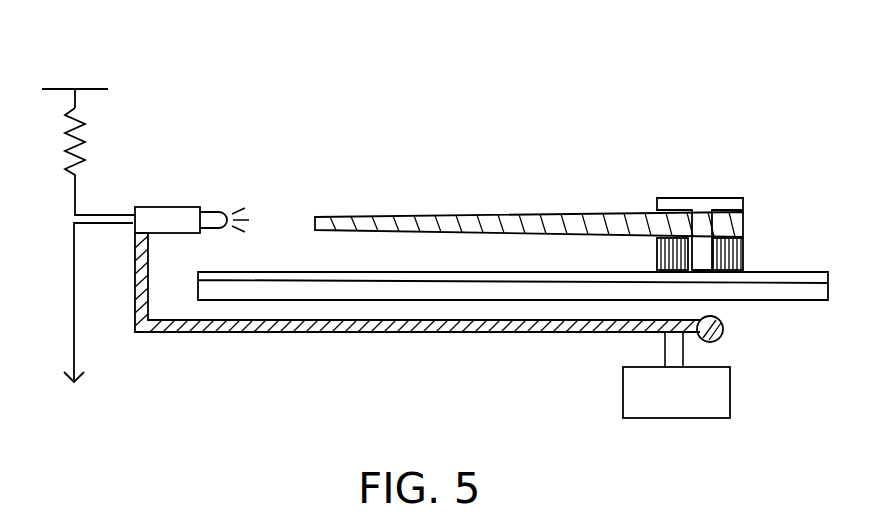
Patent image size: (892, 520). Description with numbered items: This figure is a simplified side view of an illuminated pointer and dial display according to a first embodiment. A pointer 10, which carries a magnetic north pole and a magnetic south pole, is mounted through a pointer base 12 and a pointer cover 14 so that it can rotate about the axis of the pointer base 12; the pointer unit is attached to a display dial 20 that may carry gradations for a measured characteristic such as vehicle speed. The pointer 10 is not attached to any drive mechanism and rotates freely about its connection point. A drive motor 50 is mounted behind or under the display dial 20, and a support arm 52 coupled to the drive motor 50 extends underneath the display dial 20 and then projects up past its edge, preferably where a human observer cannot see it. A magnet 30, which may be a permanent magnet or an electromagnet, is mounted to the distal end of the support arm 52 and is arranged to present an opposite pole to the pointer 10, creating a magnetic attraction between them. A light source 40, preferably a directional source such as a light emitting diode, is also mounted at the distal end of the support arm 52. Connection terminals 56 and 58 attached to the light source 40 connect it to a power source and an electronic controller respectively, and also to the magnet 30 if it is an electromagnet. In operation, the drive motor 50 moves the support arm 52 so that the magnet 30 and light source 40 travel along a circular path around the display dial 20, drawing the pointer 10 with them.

The pointer 10 is at (452, 208).
The pointer base 12 is at (752, 252).
The pointer cover 14 is at (708, 192).
The display dial 20 is at (820, 306).
The magnet 30 is at (162, 203).
The light source 40 is at (209, 205).
The drive motor 50 is at (744, 416).
The support arm 52 is at (241, 345).
The connection terminal 56 is at (70, 85).
The connection terminal 58 is at (62, 388).